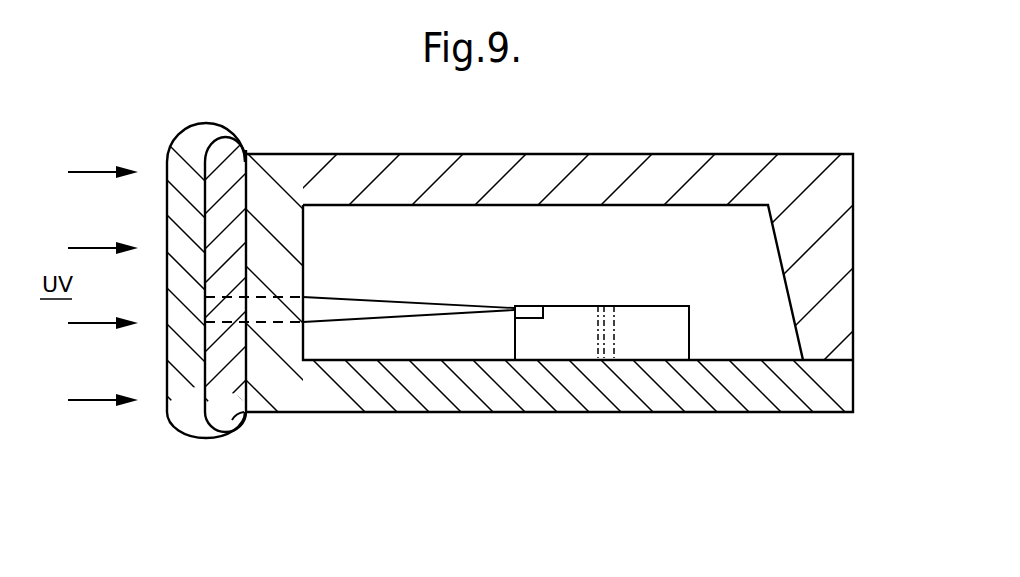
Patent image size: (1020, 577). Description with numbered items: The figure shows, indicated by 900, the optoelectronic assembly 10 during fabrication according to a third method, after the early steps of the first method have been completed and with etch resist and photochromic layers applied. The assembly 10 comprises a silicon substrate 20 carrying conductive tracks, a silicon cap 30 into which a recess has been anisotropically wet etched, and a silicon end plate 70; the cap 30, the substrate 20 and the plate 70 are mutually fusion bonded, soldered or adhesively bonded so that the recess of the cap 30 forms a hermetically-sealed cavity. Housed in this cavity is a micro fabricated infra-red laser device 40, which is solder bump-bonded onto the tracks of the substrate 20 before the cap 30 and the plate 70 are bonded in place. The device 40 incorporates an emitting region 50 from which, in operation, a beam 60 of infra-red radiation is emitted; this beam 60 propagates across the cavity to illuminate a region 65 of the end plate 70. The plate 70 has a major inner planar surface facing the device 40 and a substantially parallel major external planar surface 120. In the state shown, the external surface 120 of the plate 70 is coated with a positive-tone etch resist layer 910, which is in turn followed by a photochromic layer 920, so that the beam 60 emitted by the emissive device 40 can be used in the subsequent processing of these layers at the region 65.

The assembly coated with etch resist and photochromic layers 900 is at (735, 73).
The optoelectronic assembly 10 is at (795, 140).
The silicon substrate 20 is at (782, 390).
The silicon cap 30 is at (658, 154).
The silicon end plate 70 is at (284, 392).
The photochromic layer 920 is at (167, 156).
The positive-tone etch resist layer 910 is at (232, 150).
The major external surface of the plate 120 is at (236, 412).
The region of the silicon end plate 65 is at (268, 292).
The beam of infra-red radiation 60 is at (400, 304).
The infra-red laser device 40 is at (657, 340).
The emitting region 50 is at (533, 320).